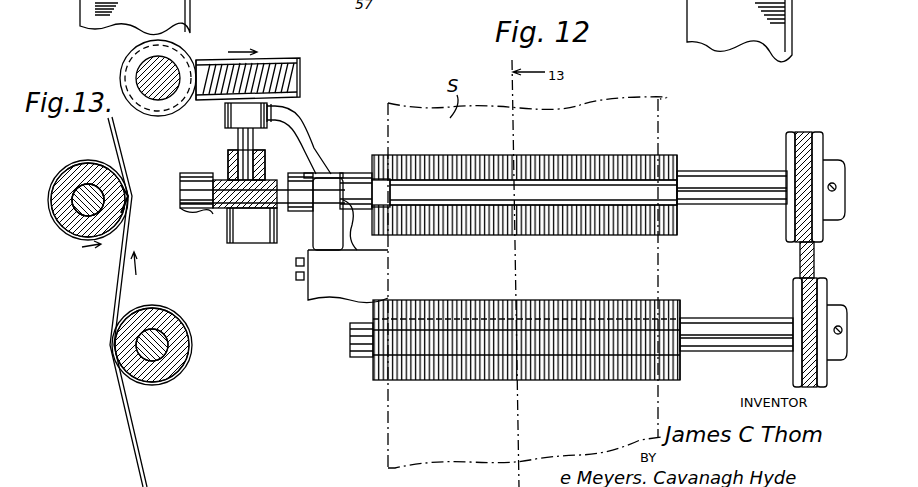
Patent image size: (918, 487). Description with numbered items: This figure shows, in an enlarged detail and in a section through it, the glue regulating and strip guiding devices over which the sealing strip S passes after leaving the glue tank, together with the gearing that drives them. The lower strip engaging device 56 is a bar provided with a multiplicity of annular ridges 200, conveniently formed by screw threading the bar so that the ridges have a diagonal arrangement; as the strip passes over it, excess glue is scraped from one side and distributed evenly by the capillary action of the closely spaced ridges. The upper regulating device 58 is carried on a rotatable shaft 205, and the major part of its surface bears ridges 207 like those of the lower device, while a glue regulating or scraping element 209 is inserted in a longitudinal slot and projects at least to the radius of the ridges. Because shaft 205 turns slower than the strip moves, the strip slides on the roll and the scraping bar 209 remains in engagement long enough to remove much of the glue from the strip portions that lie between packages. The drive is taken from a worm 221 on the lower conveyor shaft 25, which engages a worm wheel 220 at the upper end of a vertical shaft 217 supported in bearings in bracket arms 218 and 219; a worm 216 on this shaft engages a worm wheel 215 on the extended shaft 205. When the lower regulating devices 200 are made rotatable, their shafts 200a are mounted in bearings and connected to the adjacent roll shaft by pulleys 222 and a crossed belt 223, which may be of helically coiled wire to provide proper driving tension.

In FIG. 13, the lower conveyor shaft 25 is at (160, 99).
In FIG. 13, the strip engaging and guiding device 56 is at (176, 343).
In FIG. 12, the strip engaging and guiding device 56 is at (681, 303).
In FIG. 13, the glue regulating device 58 is at (72, 178).
In FIG. 12, the glue regulating device 58 is at (678, 156).
In FIG. 13, the annular ridges 200 is at (166, 386).
In FIG. 12, the annular ridges 200 is at (578, 282).
In FIG. 12, the shaft 200a is at (722, 348).
In FIG. 13, the rotatable shaft 205 is at (56, 238).
In FIG. 12, the rotatable shaft 205 is at (353, 176).
In FIG. 13, the ridges 207 is at (88, 163).
In FIG. 12, the ridges 207 is at (539, 138).
In FIG. 13, the glue regulating or scraping element 209 is at (129, 201).
In FIG. 12, the glue regulating or scraping element 209 is at (402, 192).
In FIG. 13, the worm wheel 215 is at (227, 155).
In FIG. 13, the worm 216 is at (226, 210).
In FIG. 13, the vertical shaft 217 is at (243, 139).
In FIG. 13, the bracket arm 218 is at (296, 132).
In FIG. 13, the bracket arm 219 is at (285, 228).
In FIG. 13, the worm wheel 220 is at (302, 70).
In FIG. 13, the worm 221 is at (192, 62).
In FIG. 12, the pulleys 222 is at (803, 132).
In FIG. 12, the crossed belt 223 is at (793, 257).
In FIG. 13, the sealing strip S is at (111, 290).